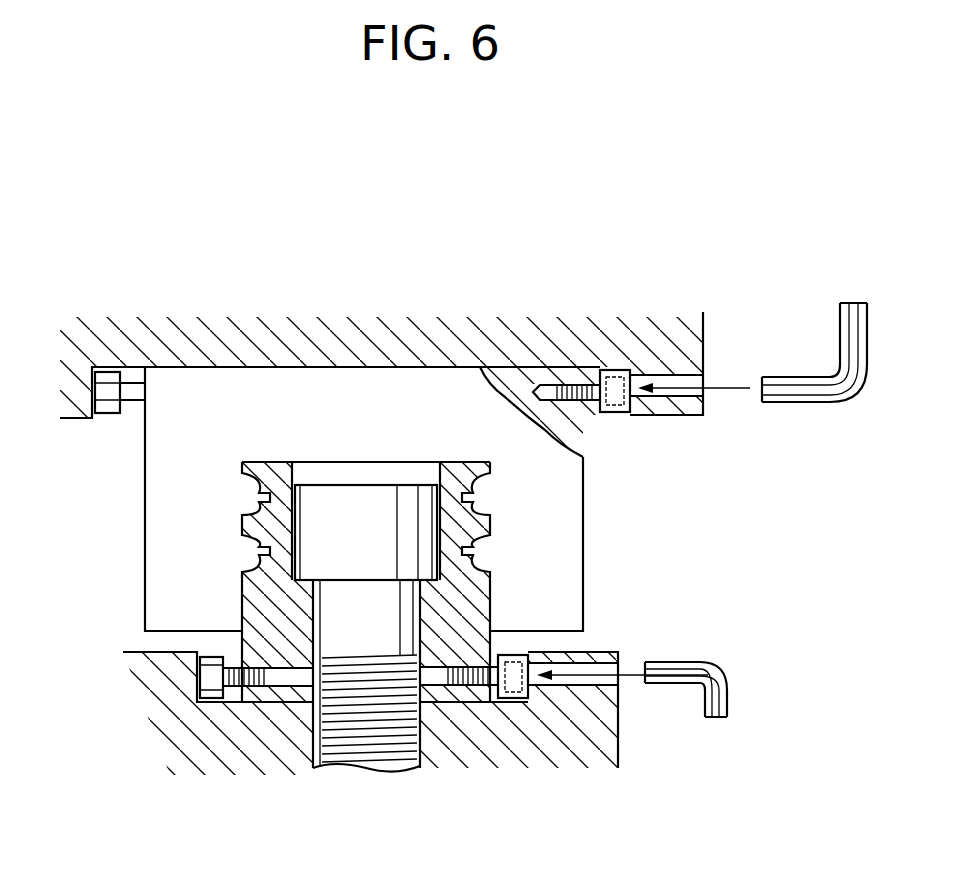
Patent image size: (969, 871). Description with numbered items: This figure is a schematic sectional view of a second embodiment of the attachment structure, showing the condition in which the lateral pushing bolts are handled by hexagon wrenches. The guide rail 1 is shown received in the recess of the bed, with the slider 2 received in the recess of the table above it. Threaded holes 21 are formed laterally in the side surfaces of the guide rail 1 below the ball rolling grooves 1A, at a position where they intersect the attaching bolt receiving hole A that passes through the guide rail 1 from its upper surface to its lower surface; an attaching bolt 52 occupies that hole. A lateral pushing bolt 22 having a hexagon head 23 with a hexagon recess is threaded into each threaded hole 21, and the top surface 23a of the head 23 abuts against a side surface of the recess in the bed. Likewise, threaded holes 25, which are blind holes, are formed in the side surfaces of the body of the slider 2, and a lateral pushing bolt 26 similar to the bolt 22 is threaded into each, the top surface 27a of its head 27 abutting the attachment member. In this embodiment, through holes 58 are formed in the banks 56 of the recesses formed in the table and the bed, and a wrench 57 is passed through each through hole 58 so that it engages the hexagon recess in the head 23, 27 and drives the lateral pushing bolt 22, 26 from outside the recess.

The guide rail 1 is at (272, 697).
The ball rolling grooves 1A is at (247, 495).
The slider 2 is at (306, 382).
The threaded holes 21 is at (452, 687).
The lateral pushing bolt 22 is at (232, 687).
The hexagon head 23 is at (510, 698).
The top surface of the head 23a is at (530, 698).
The threaded holes 25 is at (558, 380).
The lateral pushing bolt 26 is at (130, 403).
The head 27 is at (617, 415).
The top surface of the head 27a is at (643, 372).
The clamping bolt 52 is at (357, 748).
The banks 56 is at (680, 417).
The wrench 57 is at (843, 338).
The through holes 58 is at (703, 380).
The attaching bolt receiving hole A is at (392, 480).